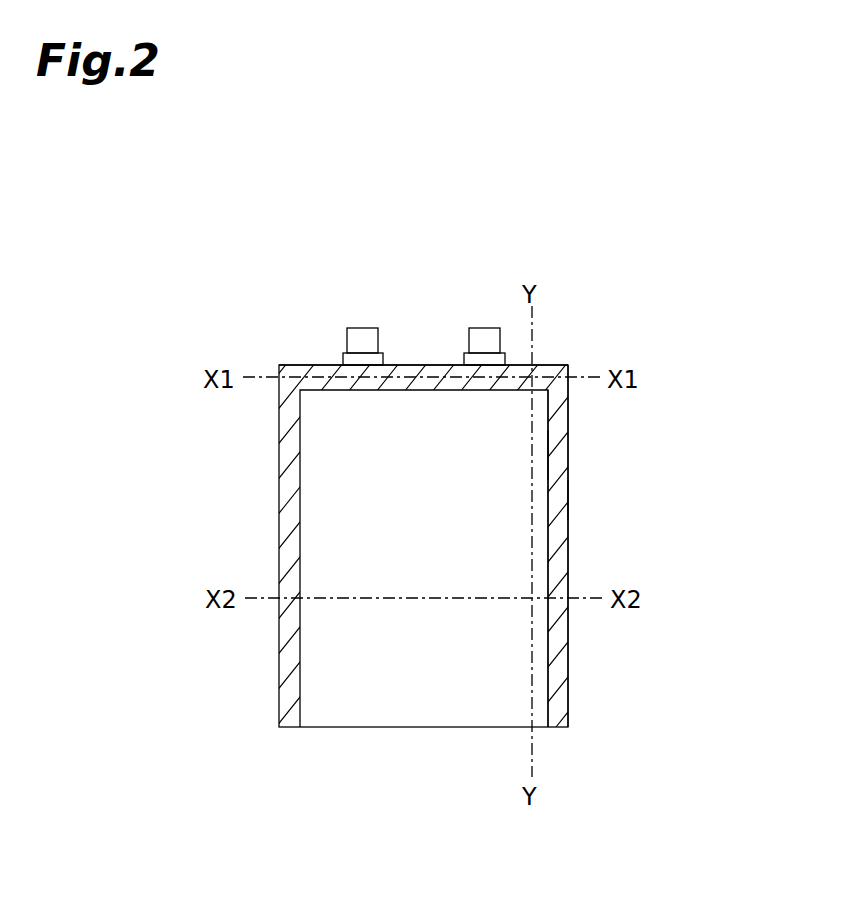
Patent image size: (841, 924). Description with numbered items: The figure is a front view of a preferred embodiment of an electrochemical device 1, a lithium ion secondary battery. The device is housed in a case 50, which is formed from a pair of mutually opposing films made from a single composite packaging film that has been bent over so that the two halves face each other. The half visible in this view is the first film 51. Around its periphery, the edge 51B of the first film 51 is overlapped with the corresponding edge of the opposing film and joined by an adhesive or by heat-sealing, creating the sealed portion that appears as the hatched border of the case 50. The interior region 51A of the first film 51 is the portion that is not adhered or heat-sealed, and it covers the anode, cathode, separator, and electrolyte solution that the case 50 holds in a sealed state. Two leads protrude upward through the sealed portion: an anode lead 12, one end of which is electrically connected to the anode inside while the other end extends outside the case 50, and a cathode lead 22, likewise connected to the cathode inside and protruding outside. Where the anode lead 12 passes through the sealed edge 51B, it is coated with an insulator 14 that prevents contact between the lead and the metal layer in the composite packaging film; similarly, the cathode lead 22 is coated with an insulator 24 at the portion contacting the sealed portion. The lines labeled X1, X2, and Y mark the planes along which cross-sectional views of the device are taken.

The electrochemical device 1 is at (560, 258).
The anode lead 12 is at (363, 328).
The insulator 14 is at (343, 360).
The cathode lead 22 is at (485, 328).
The insulator 24 is at (464, 358).
The case 50 is at (568, 542).
The first film 51 is at (675, 442).
The region of the first film that is not adhered or heat-sealed 51A is at (513, 452).
The edge of the first film 51B is at (550, 498).